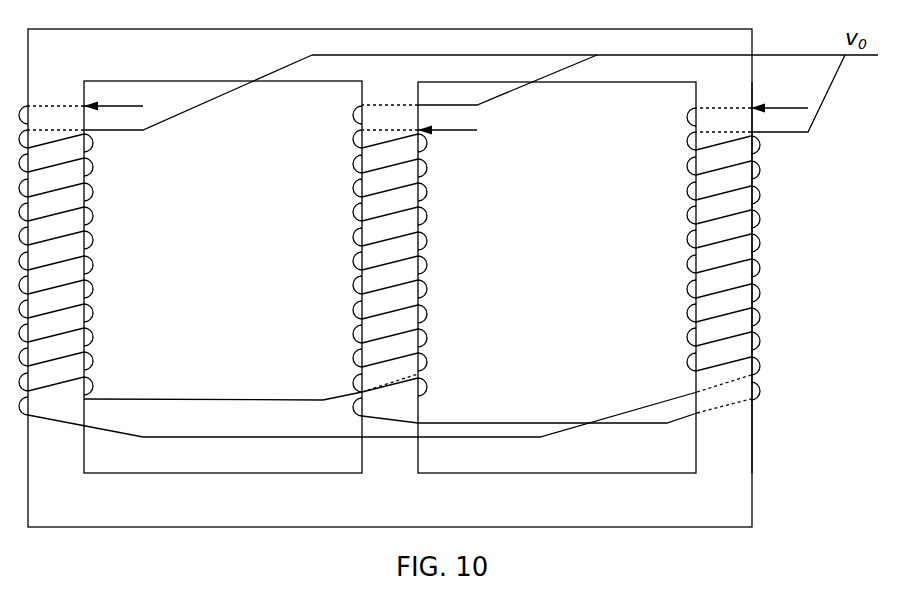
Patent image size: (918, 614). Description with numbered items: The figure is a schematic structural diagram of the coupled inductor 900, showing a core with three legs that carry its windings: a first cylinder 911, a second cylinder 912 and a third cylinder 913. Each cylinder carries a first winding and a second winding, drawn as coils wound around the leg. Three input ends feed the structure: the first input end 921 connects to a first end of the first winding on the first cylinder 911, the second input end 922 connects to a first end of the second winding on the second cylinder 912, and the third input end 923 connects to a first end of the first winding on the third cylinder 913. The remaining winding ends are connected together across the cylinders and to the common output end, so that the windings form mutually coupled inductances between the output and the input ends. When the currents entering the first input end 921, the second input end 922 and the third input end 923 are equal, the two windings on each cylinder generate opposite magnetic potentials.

The coupled inductor 900 is at (806, 48).
The first cylinder 911 is at (110, 456).
The second cylinder 912 is at (420, 468).
The third cylinder 913 is at (752, 455).
The first input end 921 is at (385, 246).
The second input end 922 is at (552, 239).
The third input end 923 is at (766, 227).